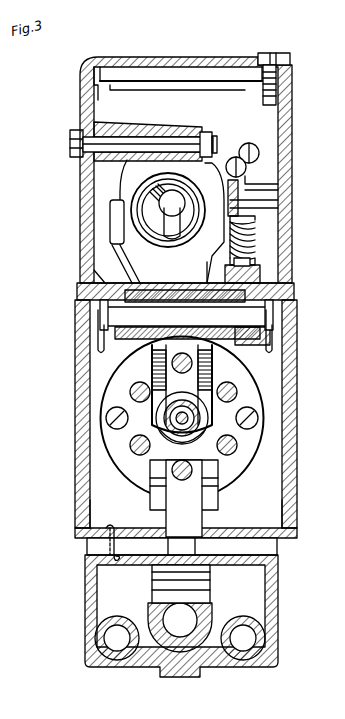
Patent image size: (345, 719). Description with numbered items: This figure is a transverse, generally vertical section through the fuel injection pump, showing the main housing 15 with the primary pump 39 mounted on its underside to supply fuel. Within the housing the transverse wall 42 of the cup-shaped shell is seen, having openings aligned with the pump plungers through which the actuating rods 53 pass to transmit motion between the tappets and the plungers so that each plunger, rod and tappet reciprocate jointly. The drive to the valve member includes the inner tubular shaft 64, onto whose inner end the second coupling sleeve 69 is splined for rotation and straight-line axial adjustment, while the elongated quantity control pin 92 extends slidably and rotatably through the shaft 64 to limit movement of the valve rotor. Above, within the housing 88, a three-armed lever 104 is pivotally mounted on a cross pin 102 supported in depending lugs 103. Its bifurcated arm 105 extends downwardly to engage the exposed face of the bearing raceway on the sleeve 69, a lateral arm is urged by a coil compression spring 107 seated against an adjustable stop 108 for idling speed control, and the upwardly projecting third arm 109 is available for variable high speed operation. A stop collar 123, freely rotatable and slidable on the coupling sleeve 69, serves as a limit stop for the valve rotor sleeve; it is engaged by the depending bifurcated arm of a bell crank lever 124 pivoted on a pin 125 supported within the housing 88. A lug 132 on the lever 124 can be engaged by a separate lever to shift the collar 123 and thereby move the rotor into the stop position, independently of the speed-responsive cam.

The main housing 15 is at (292, 395).
The primary pump 39 is at (215, 652).
The transverse wall 42 is at (238, 470).
The actuating rods 53 is at (230, 390).
The inner tubular shaft 64 is at (160, 418).
The second coupling sleeve 69 is at (190, 400).
The housing 88 is at (280, 152).
The quantity control pin 92 is at (203, 418).
The cross pin 102 is at (245, 318).
The depending lugs 103 is at (97, 337).
The three-armed lever 104 is at (172, 292).
The bifurcated arm 105 is at (167, 389).
The coil compression spring 107 is at (258, 243).
The adjustable stop 108 is at (250, 143).
The third arm 109 is at (197, 265).
The stop collar 123 is at (200, 436).
The bell crank lever 124 is at (127, 258).
The pin 125 is at (172, 146).
The lug 132 is at (118, 220).